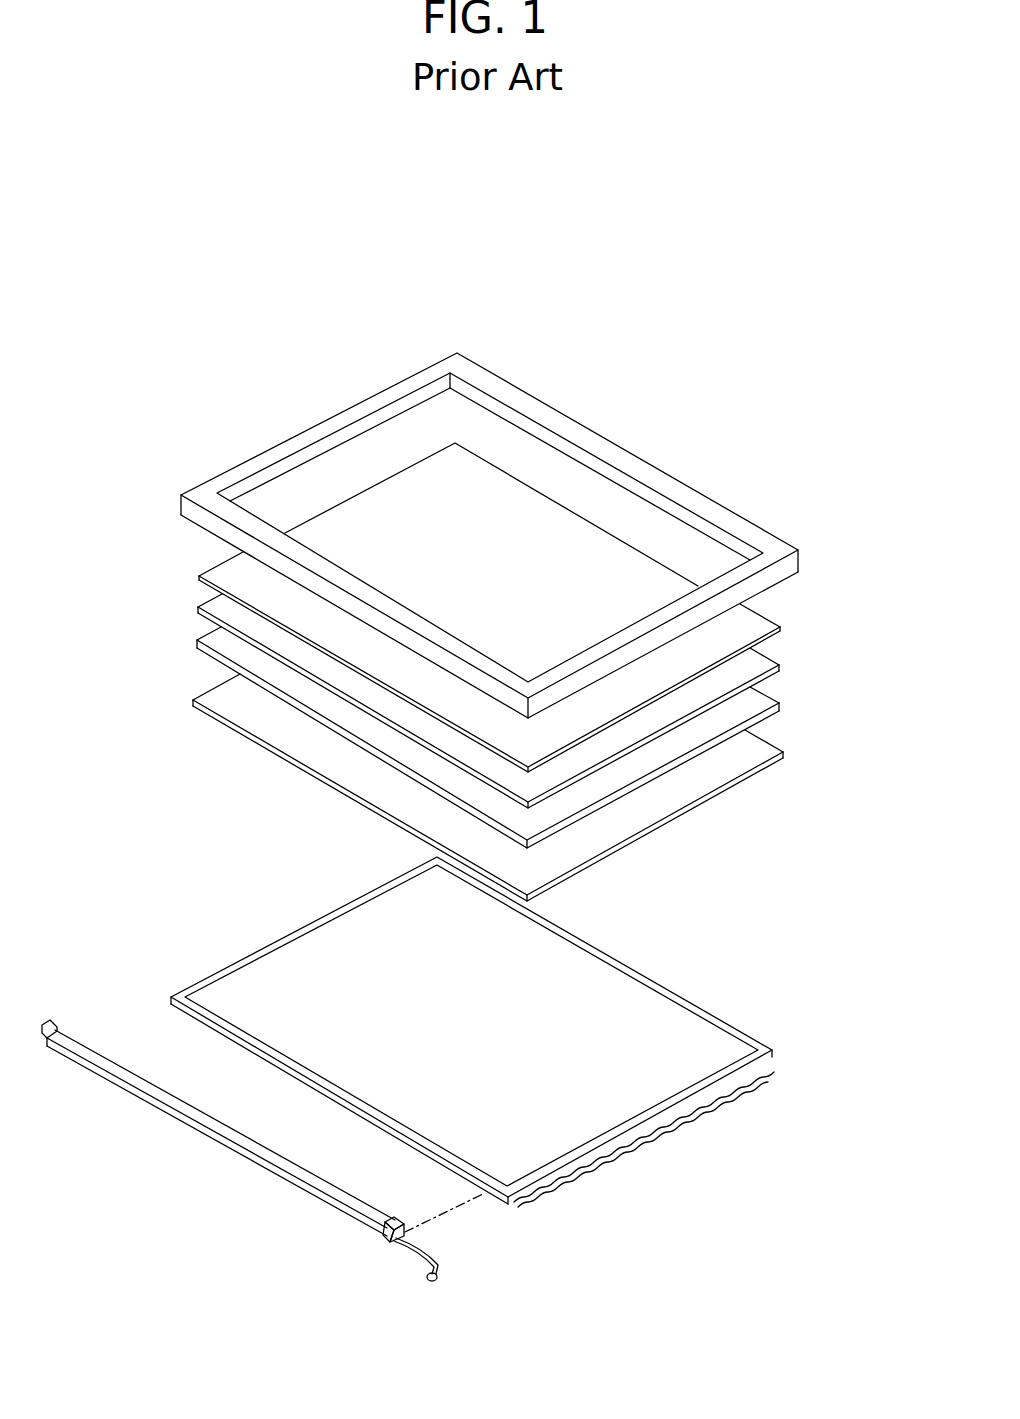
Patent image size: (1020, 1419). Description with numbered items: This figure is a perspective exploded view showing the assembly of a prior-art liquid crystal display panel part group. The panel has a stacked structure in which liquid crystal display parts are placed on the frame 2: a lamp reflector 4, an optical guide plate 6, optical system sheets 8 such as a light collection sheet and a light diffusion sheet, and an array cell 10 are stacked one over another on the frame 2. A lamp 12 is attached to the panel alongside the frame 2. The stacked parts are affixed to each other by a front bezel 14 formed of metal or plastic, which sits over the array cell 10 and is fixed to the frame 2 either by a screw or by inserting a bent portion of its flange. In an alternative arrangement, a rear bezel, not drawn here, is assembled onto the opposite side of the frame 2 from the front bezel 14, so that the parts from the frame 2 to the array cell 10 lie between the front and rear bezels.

The front bezel 14 is at (785, 545).
The array cell 10 is at (770, 627).
The optical system sheets 8 is at (773, 664).
The optical guide plate 6 is at (776, 703).
The lamp reflector 4 is at (758, 748).
The frame 2 is at (682, 997).
The lamp 12 is at (303, 1197).